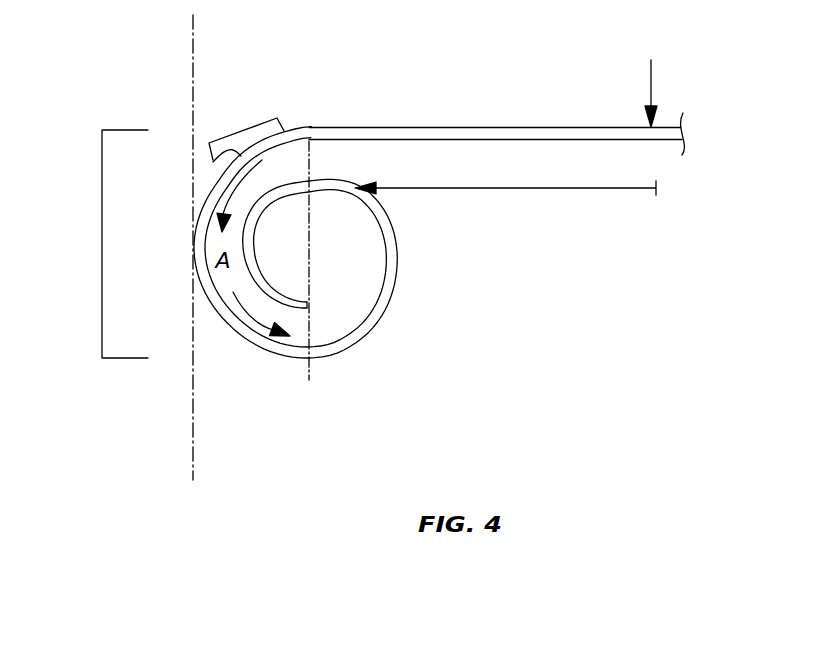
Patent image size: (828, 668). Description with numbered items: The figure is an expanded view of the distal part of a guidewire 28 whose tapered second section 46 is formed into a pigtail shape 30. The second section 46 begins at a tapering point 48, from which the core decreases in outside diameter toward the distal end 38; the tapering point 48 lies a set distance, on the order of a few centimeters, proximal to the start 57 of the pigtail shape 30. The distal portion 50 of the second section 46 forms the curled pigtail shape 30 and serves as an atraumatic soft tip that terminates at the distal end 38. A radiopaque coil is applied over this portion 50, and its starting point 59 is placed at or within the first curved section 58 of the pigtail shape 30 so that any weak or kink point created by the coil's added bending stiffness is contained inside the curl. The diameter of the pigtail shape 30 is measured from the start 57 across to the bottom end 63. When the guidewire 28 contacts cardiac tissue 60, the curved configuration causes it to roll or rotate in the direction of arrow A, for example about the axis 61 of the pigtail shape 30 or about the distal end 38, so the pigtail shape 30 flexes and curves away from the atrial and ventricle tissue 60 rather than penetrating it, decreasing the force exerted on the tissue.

The guidewire 28 is at (451, 94).
The pigtail shape 30 is at (347, 348).
The distal end 38 is at (308, 302).
The second section 46 is at (505, 201).
The tapering point 48 is at (651, 82).
The portion of the second section 50 is at (102, 248).
The start of the pigtail shape 57 is at (303, 115).
The first curved section 58 is at (243, 130).
The coil starting point 59 is at (213, 162).
The cardiac tissue 60 is at (194, 463).
The axis of the pigtail shape 61 is at (308, 250).
The bottom end of the pigtail shape 63 is at (307, 277).